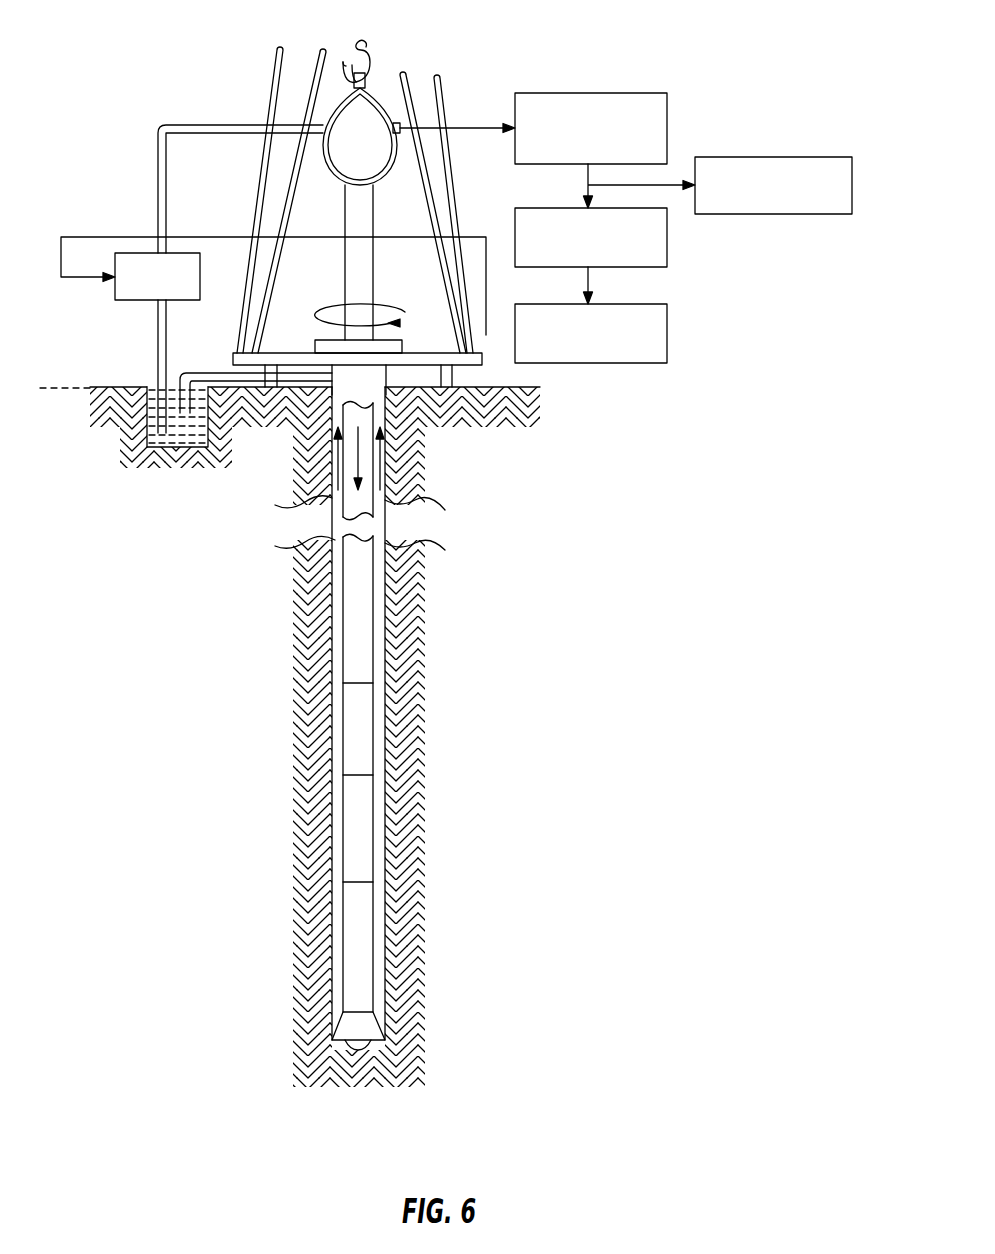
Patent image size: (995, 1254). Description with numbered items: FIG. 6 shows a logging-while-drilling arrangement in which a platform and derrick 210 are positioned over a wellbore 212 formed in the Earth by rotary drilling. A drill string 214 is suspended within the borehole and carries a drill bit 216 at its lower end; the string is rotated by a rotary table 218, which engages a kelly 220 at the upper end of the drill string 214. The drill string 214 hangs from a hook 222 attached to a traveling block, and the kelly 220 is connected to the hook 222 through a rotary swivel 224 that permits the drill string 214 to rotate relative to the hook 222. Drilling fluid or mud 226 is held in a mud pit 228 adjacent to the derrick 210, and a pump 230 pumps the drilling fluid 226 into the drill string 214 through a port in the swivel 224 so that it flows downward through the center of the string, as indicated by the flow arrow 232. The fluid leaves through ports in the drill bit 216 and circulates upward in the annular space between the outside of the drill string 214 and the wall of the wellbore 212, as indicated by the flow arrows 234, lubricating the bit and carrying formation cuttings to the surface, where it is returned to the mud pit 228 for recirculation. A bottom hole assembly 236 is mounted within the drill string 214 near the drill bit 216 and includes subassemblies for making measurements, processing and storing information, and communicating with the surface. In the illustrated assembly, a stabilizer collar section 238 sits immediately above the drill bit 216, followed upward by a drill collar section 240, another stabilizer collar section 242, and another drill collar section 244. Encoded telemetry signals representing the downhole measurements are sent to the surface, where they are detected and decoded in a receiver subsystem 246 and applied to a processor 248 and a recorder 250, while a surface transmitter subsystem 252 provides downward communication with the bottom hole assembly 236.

The platform and derrick 210 is at (492, 368).
The wellbore 212 is at (380, 515).
The drill string 214 is at (367, 773).
The drill bit 216 is at (353, 1028).
The rotary table 218 is at (395, 345).
The kelly 220 is at (353, 248).
The hook 222 is at (363, 48).
The rotary swivel 224 is at (342, 157).
The drilling fluid 226 is at (192, 450).
The mud pit 228 is at (147, 430).
The pump 230 is at (133, 300).
The flow arrow 232 is at (343, 450).
The flow arrows 234 is at (373, 470).
The bottom hole assembly 236 is at (438, 971).
The stabilizer collar section 238 is at (357, 928).
The drill collar section 240 is at (357, 838).
The stabilizer collar section 242 is at (357, 745).
The drill collar section 244 is at (343, 632).
The receiver subsystem 246 is at (612, 93).
The processor 248 is at (667, 237).
The recorder 250 is at (778, 157).
The surface transmitter subsystem 252 is at (667, 332).